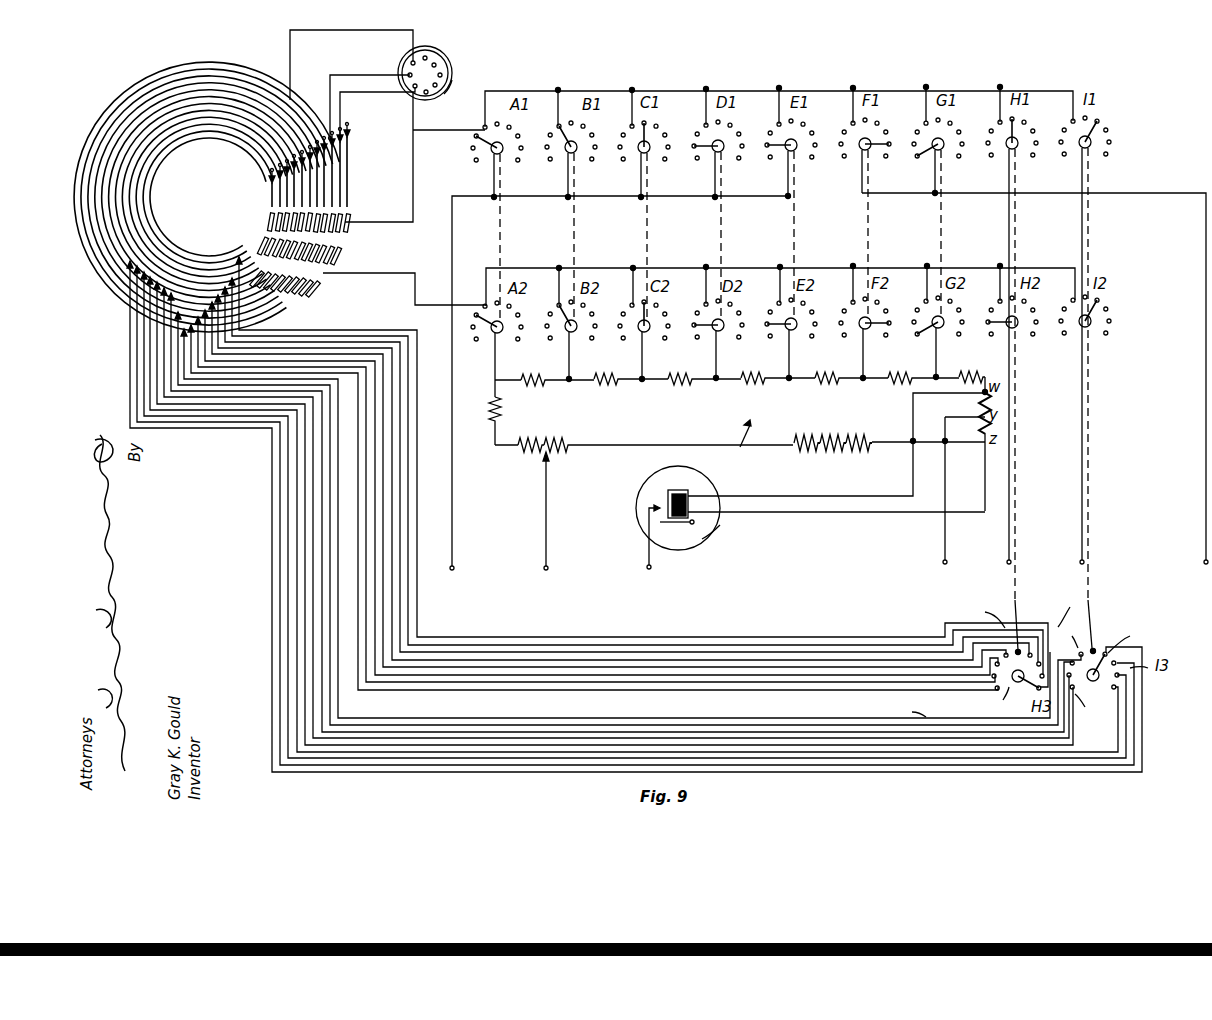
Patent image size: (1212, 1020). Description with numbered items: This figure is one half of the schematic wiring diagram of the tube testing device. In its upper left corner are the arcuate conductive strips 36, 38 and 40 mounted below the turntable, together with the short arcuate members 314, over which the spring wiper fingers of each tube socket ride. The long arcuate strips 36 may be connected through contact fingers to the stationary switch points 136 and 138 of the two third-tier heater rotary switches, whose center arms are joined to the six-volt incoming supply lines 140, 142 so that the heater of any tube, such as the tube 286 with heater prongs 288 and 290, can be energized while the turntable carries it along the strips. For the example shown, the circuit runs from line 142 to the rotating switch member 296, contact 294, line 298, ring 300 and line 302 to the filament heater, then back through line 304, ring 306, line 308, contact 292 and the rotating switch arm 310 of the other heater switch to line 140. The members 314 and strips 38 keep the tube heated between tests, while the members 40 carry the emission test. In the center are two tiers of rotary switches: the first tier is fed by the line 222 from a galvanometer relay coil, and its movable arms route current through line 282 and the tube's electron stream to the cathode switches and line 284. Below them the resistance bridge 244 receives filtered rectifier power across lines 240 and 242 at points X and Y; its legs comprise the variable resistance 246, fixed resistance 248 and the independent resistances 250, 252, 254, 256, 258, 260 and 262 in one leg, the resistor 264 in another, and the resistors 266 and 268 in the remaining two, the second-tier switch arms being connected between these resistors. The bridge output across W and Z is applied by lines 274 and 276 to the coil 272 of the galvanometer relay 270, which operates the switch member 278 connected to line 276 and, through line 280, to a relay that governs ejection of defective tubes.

The arcuate conductive strips 36 is at (140, 97).
The arcuate conductive strips 38 is at (316, 286).
The arcuate conductive strips 40 is at (346, 229).
The stationary switch point 136 is at (978, 615).
The stationary switch point 138 is at (1074, 634).
The incoming supply line 140 is at (1020, 452).
The incoming supply line 142 is at (1074, 496).
The line 222 is at (456, 253).
The line 240 is at (945, 542).
The line 242 is at (546, 520).
The bridge 244 is at (740, 443).
The variable resistance 246 is at (535, 472).
The fixed resistance 248 is at (492, 428).
The independent resistance 250 is at (538, 384).
The independent resistance 252 is at (612, 384).
The independent resistance 254 is at (686, 384).
The independent resistance 256 is at (759, 383).
The independent resistance 258 is at (833, 383).
The independent resistance 260 is at (894, 386).
The independent resistance 262 is at (982, 365).
The fixed resistor 264 is at (853, 450).
The resistor 266 is at (997, 426).
The resistor 268 is at (997, 396).
The galvanometer relay 270 is at (732, 536).
The coil 272 is at (668, 496).
The line 274 is at (762, 494).
The line 276 is at (790, 516).
The switch member 278 is at (680, 525).
The line 280 is at (648, 542).
The line 282 is at (610, 90).
The line 284 is at (1206, 373).
The tube 286 is at (450, 78).
The prong 288 is at (420, 57).
The prong 290 is at (410, 73).
The contact 292 is at (1070, 609).
The contact 294 is at (1095, 707).
The rotating switch member 296 is at (1133, 636).
The line 298 is at (903, 705).
The ring 300 is at (185, 306).
The line 302 is at (350, 78).
The line 304 is at (307, 30).
The ring 306 is at (300, 196).
The line 308 is at (257, 340).
The rotating switch arm 310 is at (992, 698).
The arcuate members 314 is at (338, 256).